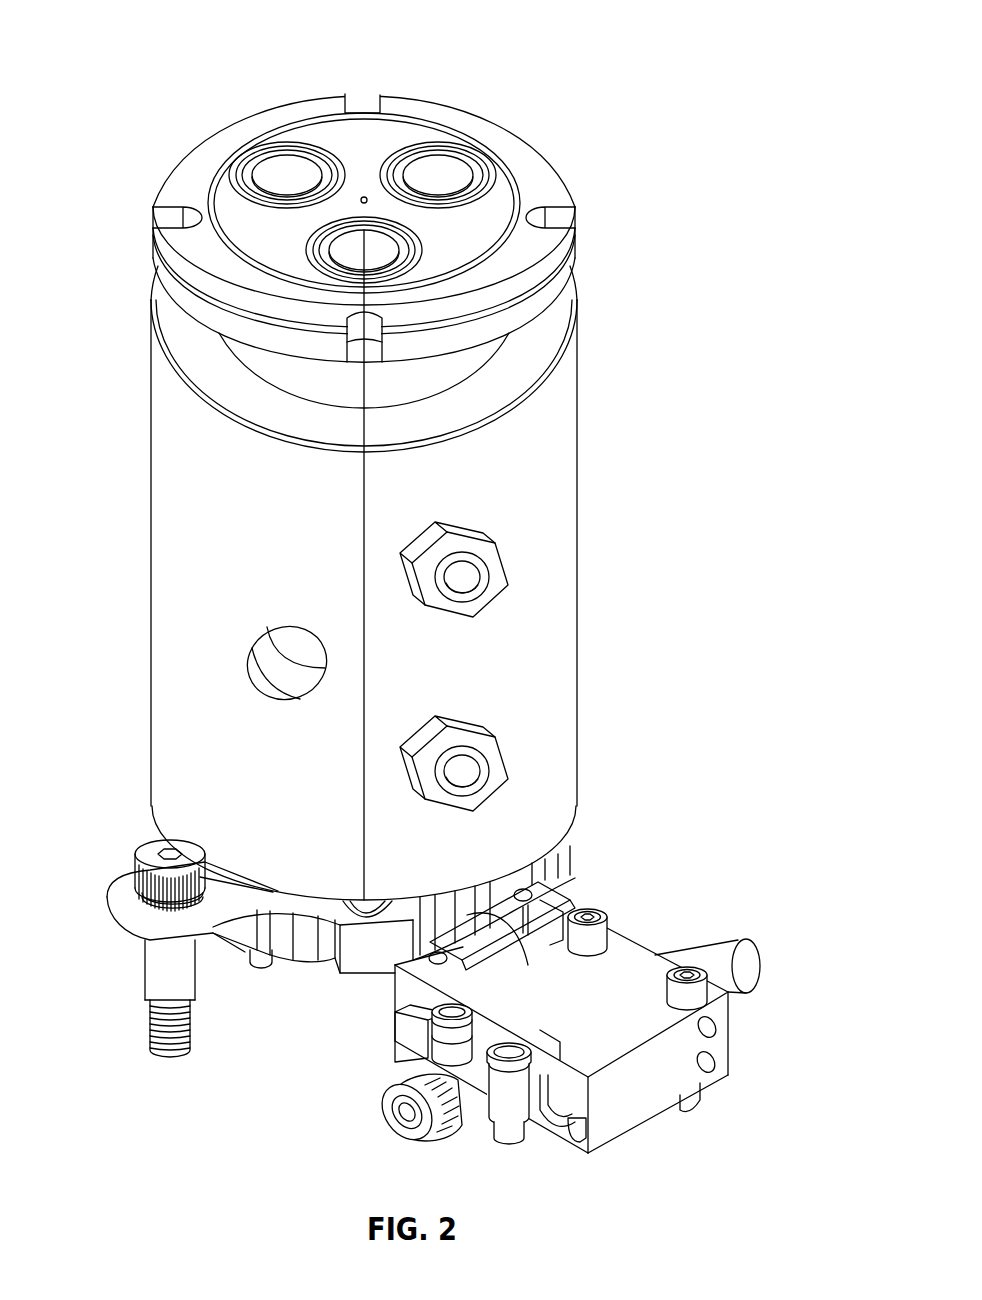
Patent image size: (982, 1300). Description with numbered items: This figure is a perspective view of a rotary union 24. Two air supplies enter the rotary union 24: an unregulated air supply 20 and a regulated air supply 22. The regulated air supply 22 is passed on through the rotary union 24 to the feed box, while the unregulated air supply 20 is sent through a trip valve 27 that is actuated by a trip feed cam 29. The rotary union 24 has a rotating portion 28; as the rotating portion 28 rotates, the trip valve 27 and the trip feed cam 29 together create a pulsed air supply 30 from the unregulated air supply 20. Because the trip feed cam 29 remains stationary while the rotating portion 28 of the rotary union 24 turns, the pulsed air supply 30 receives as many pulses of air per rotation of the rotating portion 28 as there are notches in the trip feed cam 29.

The unregulated air supply 20 is at (352, 235).
The regulated air supply 22 is at (436, 180).
The rotary union 24 is at (622, 234).
The trip valve 27 is at (602, 990).
The rotating portion 28 is at (202, 553).
The trip feed cam 29 is at (353, 953).
The pulsed air supply 30 is at (738, 952).